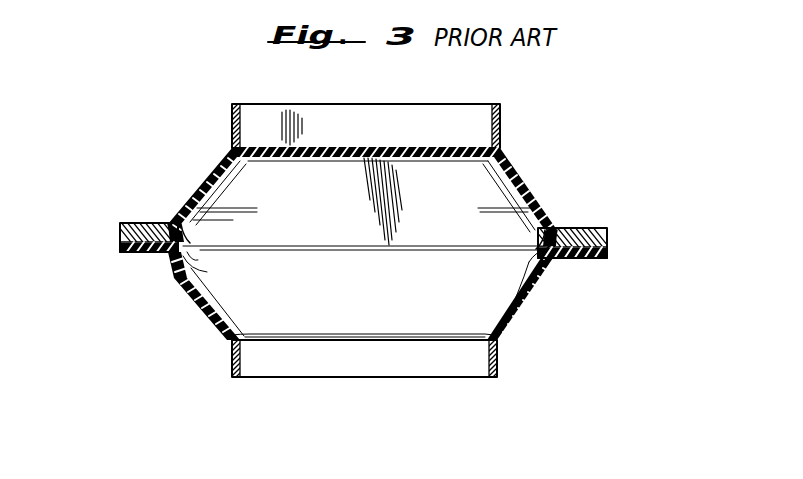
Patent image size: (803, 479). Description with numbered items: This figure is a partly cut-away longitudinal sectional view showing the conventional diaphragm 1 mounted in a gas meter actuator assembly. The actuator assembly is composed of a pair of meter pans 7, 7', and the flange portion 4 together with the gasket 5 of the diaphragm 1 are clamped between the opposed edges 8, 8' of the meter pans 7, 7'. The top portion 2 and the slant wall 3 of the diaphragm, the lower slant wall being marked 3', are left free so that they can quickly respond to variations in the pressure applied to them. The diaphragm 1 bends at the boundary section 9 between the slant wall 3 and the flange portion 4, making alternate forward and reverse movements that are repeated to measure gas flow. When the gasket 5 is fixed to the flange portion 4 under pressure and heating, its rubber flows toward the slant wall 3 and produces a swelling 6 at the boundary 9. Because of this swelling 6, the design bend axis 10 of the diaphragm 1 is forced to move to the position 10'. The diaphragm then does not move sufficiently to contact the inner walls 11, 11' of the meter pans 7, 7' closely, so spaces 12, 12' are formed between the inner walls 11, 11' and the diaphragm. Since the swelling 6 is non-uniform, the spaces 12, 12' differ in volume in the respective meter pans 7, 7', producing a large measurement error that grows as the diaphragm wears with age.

The diaphragm 1 is at (401, 146).
The top portion 2 is at (342, 148).
The slant wall 3 is at (362, 187).
The lower sloped wall 3' is at (360, 297).
The flange portion 4 is at (120, 250).
The gasket 5 is at (120, 233).
The swelling 6 is at (184, 226).
The meter pan 7 is at (363, 128).
The meter pan 7' is at (360, 359).
The opposed edge 8 is at (363, 220).
The opposed edge 8' is at (364, 271).
The boundary section 9 is at (168, 224).
The design bend axis 10 is at (367, 283).
The shifted bend axis position 10' is at (510, 272).
The inner wall 11 is at (362, 199).
The inner wall 11' is at (219, 279).
The space 12 is at (361, 208).
The space 12' is at (214, 263).